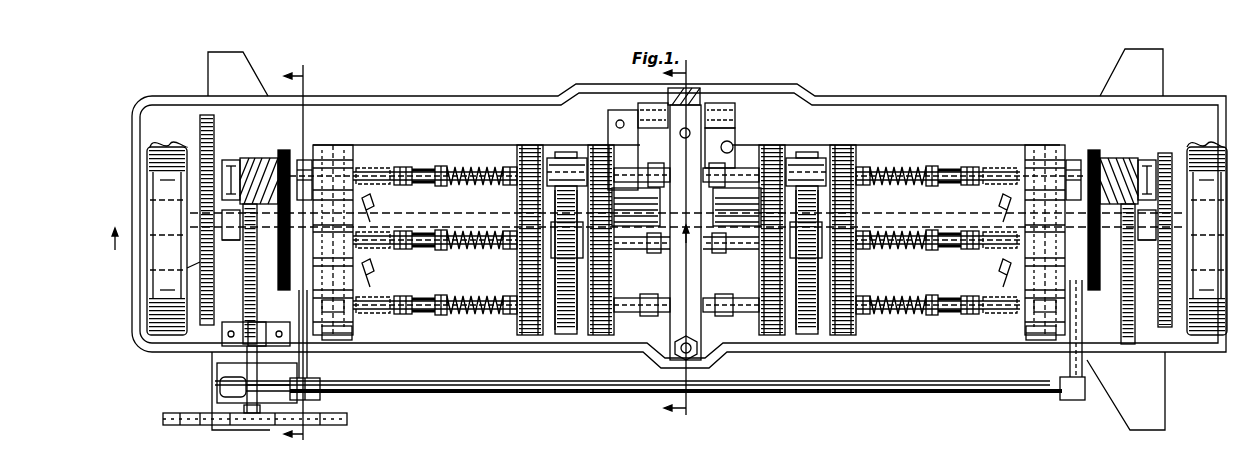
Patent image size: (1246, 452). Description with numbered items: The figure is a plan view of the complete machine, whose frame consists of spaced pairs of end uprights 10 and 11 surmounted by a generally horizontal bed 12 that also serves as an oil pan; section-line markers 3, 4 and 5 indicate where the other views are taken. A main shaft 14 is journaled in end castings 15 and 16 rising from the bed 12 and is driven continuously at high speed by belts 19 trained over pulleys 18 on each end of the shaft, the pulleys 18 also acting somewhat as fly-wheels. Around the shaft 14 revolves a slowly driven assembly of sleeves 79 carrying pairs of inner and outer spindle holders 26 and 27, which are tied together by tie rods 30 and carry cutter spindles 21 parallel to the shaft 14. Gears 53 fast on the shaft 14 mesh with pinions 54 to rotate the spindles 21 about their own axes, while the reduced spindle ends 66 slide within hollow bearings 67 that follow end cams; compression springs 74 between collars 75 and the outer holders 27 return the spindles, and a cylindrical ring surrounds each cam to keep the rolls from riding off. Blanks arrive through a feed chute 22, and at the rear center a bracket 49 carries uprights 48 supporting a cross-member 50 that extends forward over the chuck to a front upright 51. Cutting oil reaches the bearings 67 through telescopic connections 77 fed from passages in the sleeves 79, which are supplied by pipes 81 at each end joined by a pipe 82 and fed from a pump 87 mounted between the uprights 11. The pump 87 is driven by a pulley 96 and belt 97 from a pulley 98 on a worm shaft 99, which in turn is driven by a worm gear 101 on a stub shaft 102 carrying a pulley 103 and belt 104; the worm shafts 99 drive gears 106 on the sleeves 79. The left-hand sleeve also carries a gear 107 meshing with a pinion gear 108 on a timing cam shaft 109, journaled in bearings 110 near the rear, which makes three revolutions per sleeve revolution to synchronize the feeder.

The section line 3- 3 is at (687, 241).
The section line 4- 4 is at (304, 258).
The section line 5- 5 is at (396, 251).
The end uprights 10 is at (1125, 60).
The end uprights 11 is at (208, 53).
The bed 12 is at (700, 358).
The shaft 14 is at (187, 268).
The casting 15 is at (290, 292).
The casting 16 is at (1082, 294).
The pulley 18 is at (147, 165).
The belts 19 is at (152, 150).
The cutter spindle 21 is at (665, 182).
The feed chute 22 is at (718, 100).
The spindle holder 26 is at (605, 204).
The spindle holder 27 is at (525, 278).
The tie rods 30 is at (530, 160).
The uprights 48 is at (660, 104).
The bracket 49 is at (736, 135).
The cross-member 50 is at (706, 322).
The upright 51 is at (673, 345).
The gears 53 is at (540, 205).
The pinions 54 is at (566, 152).
The reduced portion 66 is at (406, 165).
The hollow bearings 67 is at (373, 166).
The compression springs 74 is at (470, 230).
The collars 75 is at (443, 165).
The telescopic hollow connections 77 is at (370, 208).
The sleeves 79 is at (408, 200).
The pipes 81 is at (345, 334).
The pipe 82 is at (866, 393).
The pump 87 is at (308, 379).
The pulley 96 is at (196, 408).
The belt 97 is at (163, 418).
The pulley 98 is at (270, 428).
The worm shaft 99 is at (222, 352).
The worm gear 101 is at (255, 160).
The stub shaft 102 is at (234, 160).
The pulley 103 is at (305, 160).
The belt 104 is at (284, 152).
The gears 106 is at (246, 292).
The gear 107 is at (147, 198).
The pinion gear 108 is at (212, 115).
The timing cam shaft 109 is at (478, 145).
The bearings 110 is at (168, 130).